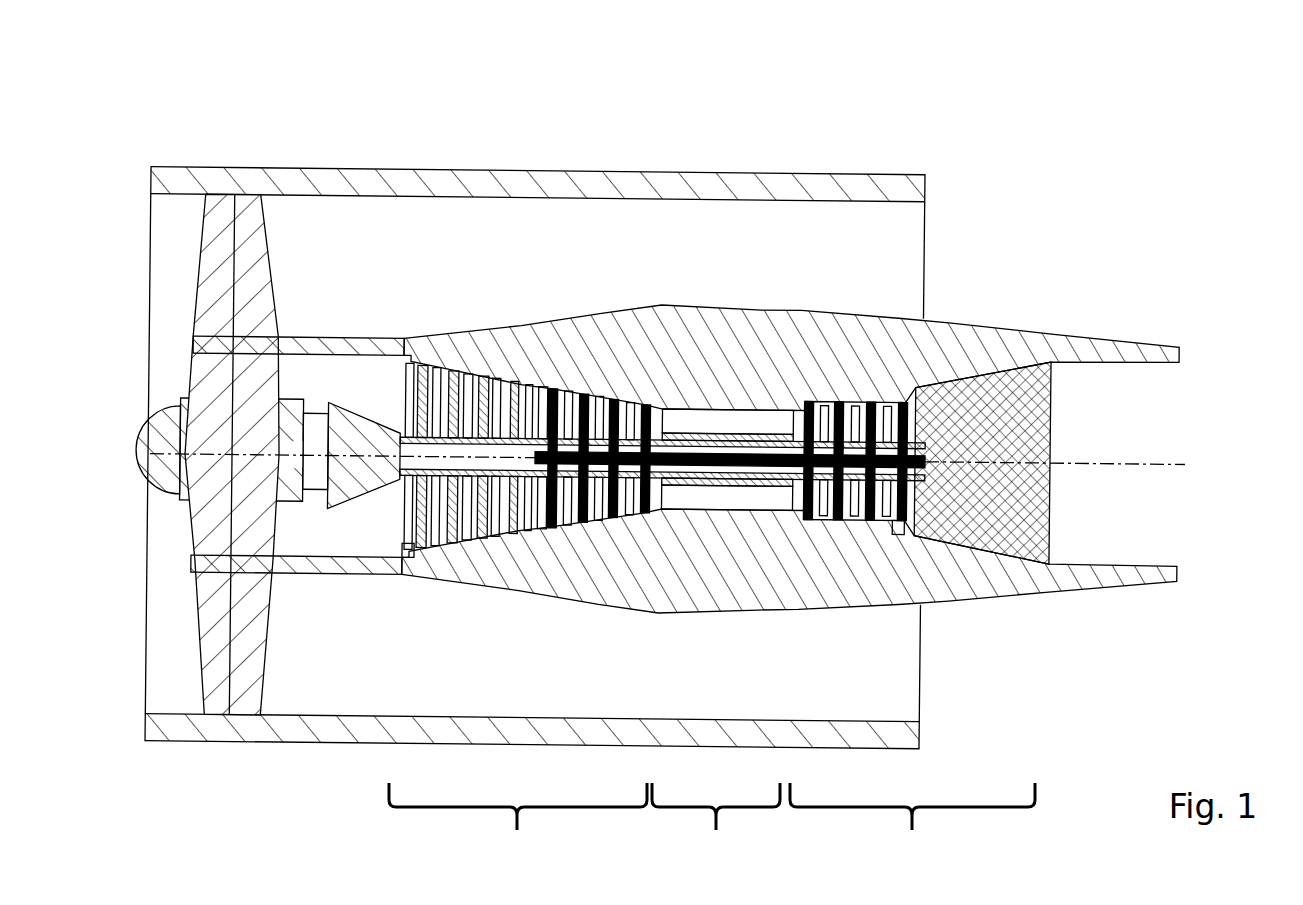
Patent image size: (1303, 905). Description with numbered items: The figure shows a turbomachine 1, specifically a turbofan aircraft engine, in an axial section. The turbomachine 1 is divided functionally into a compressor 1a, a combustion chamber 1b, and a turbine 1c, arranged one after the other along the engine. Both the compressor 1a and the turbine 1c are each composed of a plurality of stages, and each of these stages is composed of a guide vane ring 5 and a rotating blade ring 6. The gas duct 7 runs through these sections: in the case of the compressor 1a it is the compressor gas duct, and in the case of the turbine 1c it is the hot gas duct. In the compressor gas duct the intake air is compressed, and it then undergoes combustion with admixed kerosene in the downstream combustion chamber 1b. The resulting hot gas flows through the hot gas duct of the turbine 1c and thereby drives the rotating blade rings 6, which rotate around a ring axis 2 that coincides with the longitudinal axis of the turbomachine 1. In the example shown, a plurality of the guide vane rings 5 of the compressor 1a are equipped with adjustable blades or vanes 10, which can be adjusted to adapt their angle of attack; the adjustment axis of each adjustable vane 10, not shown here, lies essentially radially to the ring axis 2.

The turbomachine 1 is at (1098, 190).
The compressor 1a is at (518, 831).
The combustion chamber 1b is at (716, 831).
The turbine 1c is at (912, 831).
The ring axis 2 is at (1113, 465).
The guide vane ring 5 is at (500, 403).
The rotating blade ring 6 is at (512, 387).
The gas duct 7 is at (415, 553).
The adjustable blade or vane 10 is at (498, 525).